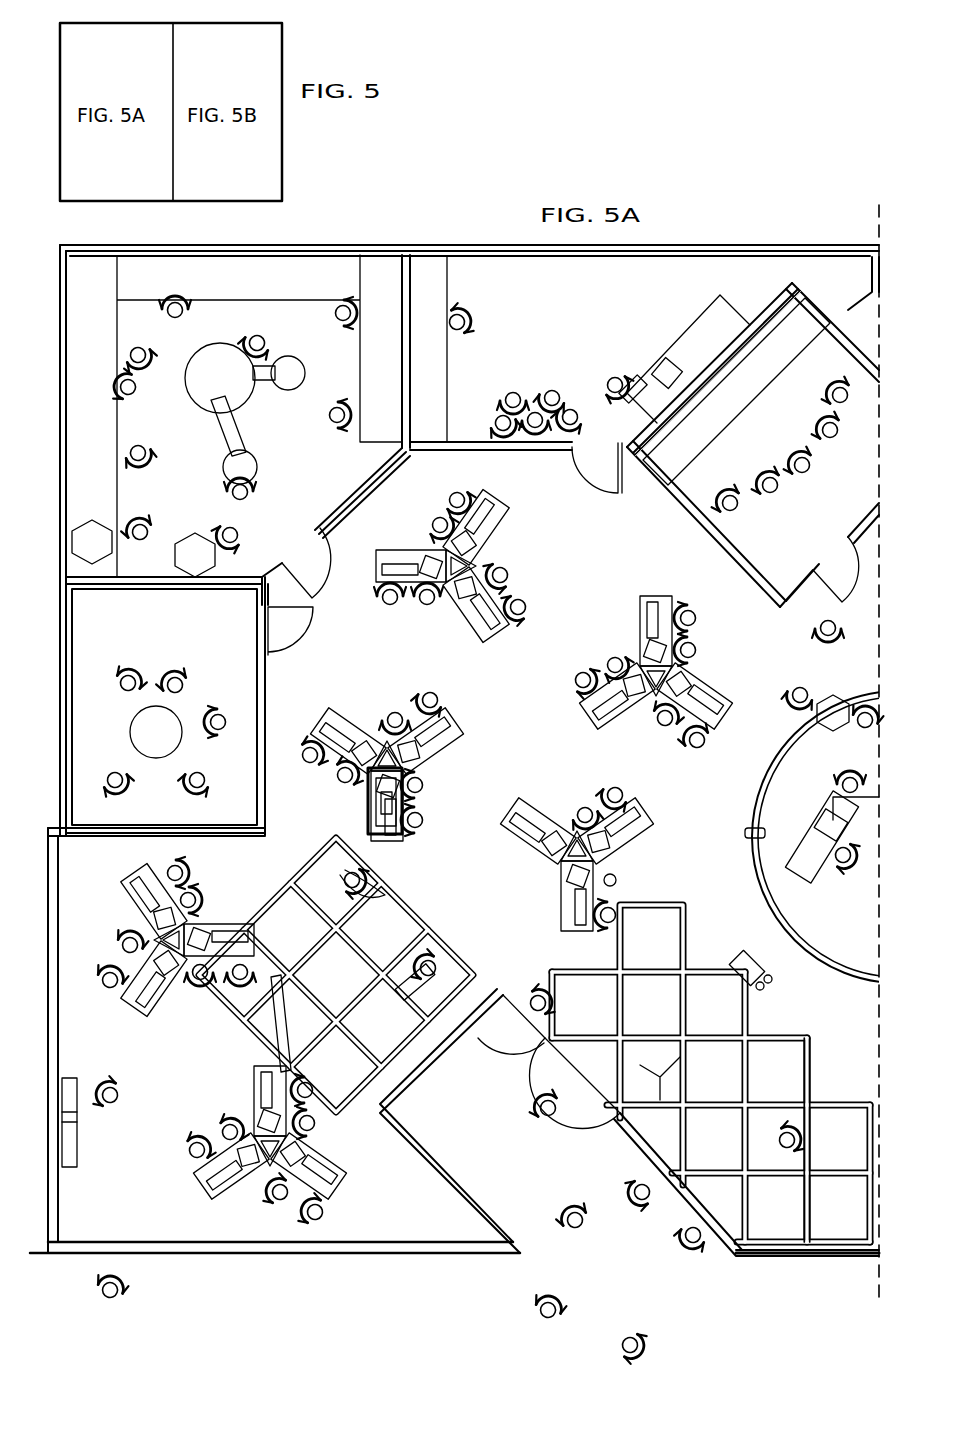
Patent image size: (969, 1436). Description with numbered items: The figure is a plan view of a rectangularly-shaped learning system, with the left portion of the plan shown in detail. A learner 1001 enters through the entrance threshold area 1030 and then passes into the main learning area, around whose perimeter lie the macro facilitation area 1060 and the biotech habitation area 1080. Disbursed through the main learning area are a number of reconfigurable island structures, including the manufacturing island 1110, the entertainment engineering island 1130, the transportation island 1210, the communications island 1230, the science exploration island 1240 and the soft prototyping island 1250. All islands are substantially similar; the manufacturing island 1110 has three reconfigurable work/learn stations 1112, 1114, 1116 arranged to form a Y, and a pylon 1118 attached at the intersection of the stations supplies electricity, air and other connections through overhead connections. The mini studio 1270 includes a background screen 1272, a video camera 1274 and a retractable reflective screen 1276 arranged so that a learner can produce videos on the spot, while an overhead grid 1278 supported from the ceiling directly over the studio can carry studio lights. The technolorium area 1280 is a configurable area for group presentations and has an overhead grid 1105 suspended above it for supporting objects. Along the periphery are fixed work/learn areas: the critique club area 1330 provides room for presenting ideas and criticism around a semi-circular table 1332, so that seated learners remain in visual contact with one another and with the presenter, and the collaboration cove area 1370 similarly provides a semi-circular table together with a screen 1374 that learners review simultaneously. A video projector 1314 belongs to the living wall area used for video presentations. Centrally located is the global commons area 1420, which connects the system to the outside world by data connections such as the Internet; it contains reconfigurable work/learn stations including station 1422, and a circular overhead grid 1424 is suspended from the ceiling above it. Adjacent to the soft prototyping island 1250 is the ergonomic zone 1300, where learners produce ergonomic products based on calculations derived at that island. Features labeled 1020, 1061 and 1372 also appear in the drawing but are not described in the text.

The learner 1001 is at (528, 1077).
The exterior wall 1020 is at (310, 1260).
The entrance threshold area 1030 is at (500, 1125).
The macro facilitation area 1060 is at (503, 305).
The corridor door 1061 is at (540, 460).
The biotech habitation area 1080 is at (275, 500).
The overhead grid 1105 is at (810, 1077).
The manufacturing island 1110 is at (580, 843).
The reconfigurable work/learn station 1112 is at (655, 835).
The reconfigurable work/learn station 1114 is at (520, 820).
The reconfigurable work/learn station 1116 is at (560, 945).
The pylon 1118 is at (600, 868).
The entertainment engineering island 1130 is at (206, 905).
The transportation island 1210 is at (517, 585).
The communications island 1230 is at (395, 700).
The science exploration island 1240 is at (688, 598).
The soft prototyping island 1250 is at (338, 1218).
The mini studio 1270 is at (326, 965).
The background screen 1272 is at (245, 1048).
The video camera 1274 is at (420, 1005).
The retractable reflective screen 1276 is at (392, 885).
The overhead grid 1278 is at (313, 850).
The technolorium area 1280 is at (715, 1101).
The ergonomic zone 1300 is at (108, 1203).
The video projector 1314 is at (768, 990).
The critique club area 1330 is at (165, 706).
The semi-circular table 1332 is at (143, 733).
The collaboration cove area 1370 is at (738, 408).
The conference desk 1372 is at (765, 405).
The screen 1374 is at (765, 330).
The global commons area 1420 is at (836, 832).
The reconfigurable work/learn station 1422 is at (746, 867).
The circular overhead grid 1424 is at (760, 790).